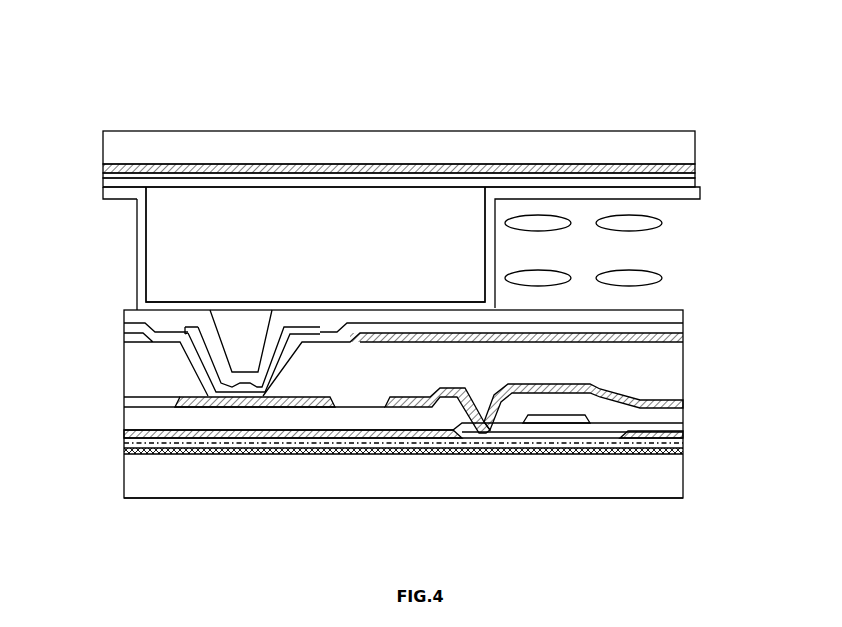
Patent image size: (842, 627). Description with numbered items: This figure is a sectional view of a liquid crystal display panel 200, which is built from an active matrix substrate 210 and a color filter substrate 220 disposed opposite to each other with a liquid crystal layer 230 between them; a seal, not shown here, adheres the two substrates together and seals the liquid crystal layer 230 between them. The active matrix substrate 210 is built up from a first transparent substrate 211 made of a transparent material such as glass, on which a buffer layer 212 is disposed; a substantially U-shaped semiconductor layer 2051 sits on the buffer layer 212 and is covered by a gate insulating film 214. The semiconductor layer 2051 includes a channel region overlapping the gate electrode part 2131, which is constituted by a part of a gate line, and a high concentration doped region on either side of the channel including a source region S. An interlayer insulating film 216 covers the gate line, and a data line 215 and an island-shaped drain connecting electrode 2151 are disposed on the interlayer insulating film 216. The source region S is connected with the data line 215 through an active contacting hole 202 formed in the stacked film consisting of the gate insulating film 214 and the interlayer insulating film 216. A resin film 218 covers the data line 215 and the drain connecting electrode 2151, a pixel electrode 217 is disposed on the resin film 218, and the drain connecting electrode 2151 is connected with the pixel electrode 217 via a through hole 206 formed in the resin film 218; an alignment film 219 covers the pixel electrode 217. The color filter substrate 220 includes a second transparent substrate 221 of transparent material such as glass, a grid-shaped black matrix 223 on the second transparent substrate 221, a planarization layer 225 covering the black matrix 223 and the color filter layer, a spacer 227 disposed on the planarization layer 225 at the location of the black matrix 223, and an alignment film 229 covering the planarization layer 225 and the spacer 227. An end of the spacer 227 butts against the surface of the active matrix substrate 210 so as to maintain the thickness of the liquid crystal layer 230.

The liquid crystal display panel 200 is at (760, 498).
The active matrix substrate 210 is at (700, 308).
The color filter substrate 220 is at (698, 131).
The second transparent substrate 221 is at (638, 145).
The black matrix 223 is at (570, 170).
The planarization layer 225 is at (533, 185).
The spacer 227 is at (340, 247).
The alignment film 229 is at (497, 197).
The liquid crystal layer 230 is at (695, 212).
The through hole 206 is at (138, 302).
The active contacting hole 202 is at (454, 311).
The alignment film 219 is at (333, 320).
The pixel electrode 217 is at (235, 342).
The resin film 218 is at (140, 370).
The drain connecting electrode 2151 is at (180, 397).
The interlayer insulating film 216 is at (187, 417).
The gate insulating film 214 is at (265, 428).
The data line 215 is at (660, 432).
The buffer layer 212 is at (370, 443).
The first transparent substrate 211 is at (440, 472).
The source region S is at (493, 428).
The gate electrode part 2131 is at (572, 415).
The semiconductor layer 2051 is at (565, 432).